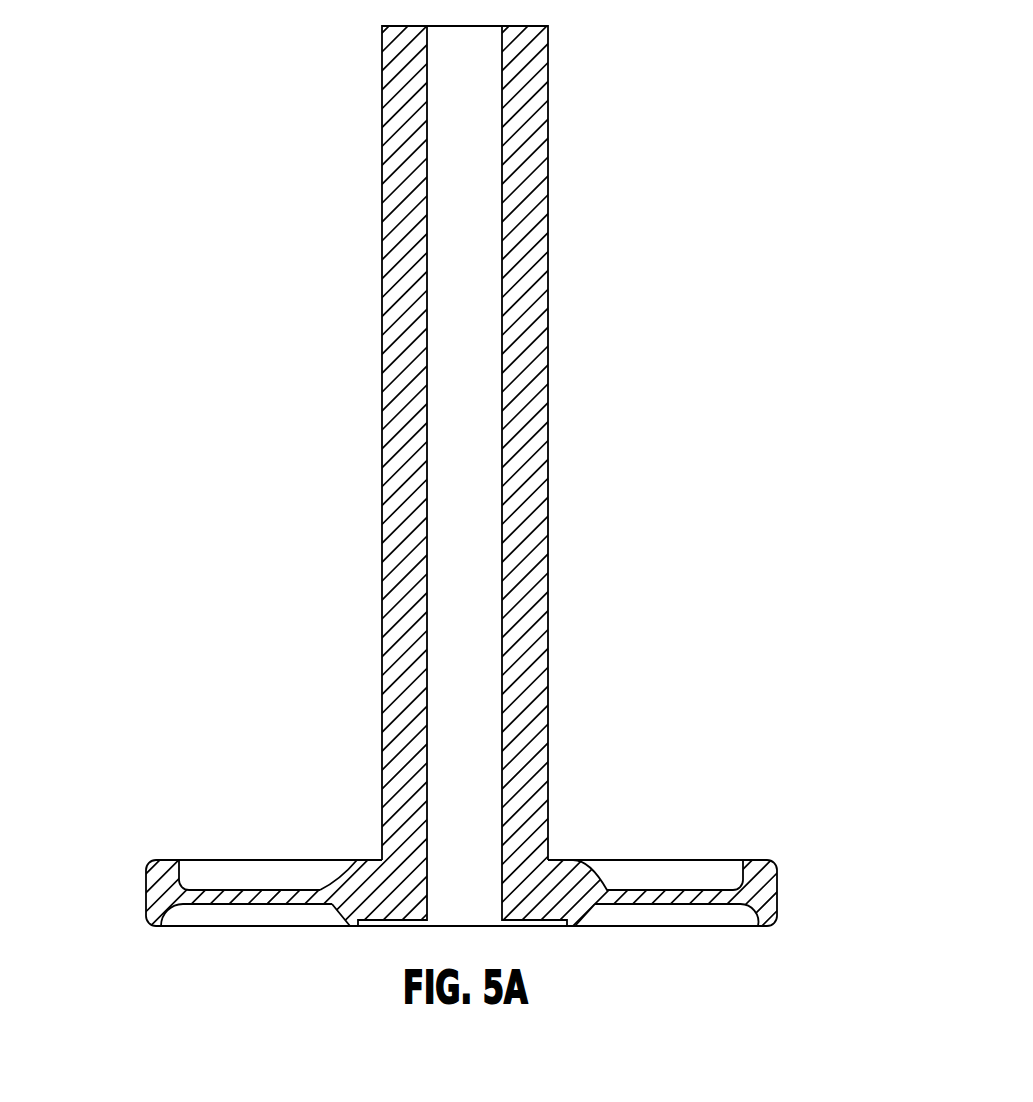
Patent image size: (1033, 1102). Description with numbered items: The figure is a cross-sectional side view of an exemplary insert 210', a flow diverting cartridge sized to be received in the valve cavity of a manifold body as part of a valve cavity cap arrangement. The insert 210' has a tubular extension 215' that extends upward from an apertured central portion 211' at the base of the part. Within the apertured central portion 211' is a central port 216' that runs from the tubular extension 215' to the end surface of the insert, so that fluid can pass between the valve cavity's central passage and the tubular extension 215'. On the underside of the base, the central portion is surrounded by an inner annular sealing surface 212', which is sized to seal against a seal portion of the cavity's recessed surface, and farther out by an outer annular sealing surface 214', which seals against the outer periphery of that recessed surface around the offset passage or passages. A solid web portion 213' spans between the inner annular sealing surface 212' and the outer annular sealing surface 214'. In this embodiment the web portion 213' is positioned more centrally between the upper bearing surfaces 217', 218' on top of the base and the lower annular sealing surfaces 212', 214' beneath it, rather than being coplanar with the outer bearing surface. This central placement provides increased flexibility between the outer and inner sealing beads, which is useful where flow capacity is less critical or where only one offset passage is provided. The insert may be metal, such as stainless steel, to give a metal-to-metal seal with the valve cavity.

The insert 210' is at (516, 550).
The apertured central portion 211' is at (461, 928).
The inner annular sealing surface 212' is at (496, 953).
The web portion 213' is at (698, 937).
The outer annular sealing surface 214' is at (243, 946).
The tubular extension 215' is at (524, 443).
The central port 216' is at (435, 476).
The upper bearing surface 217' is at (657, 825).
The upper bearing surface 218' is at (218, 846).